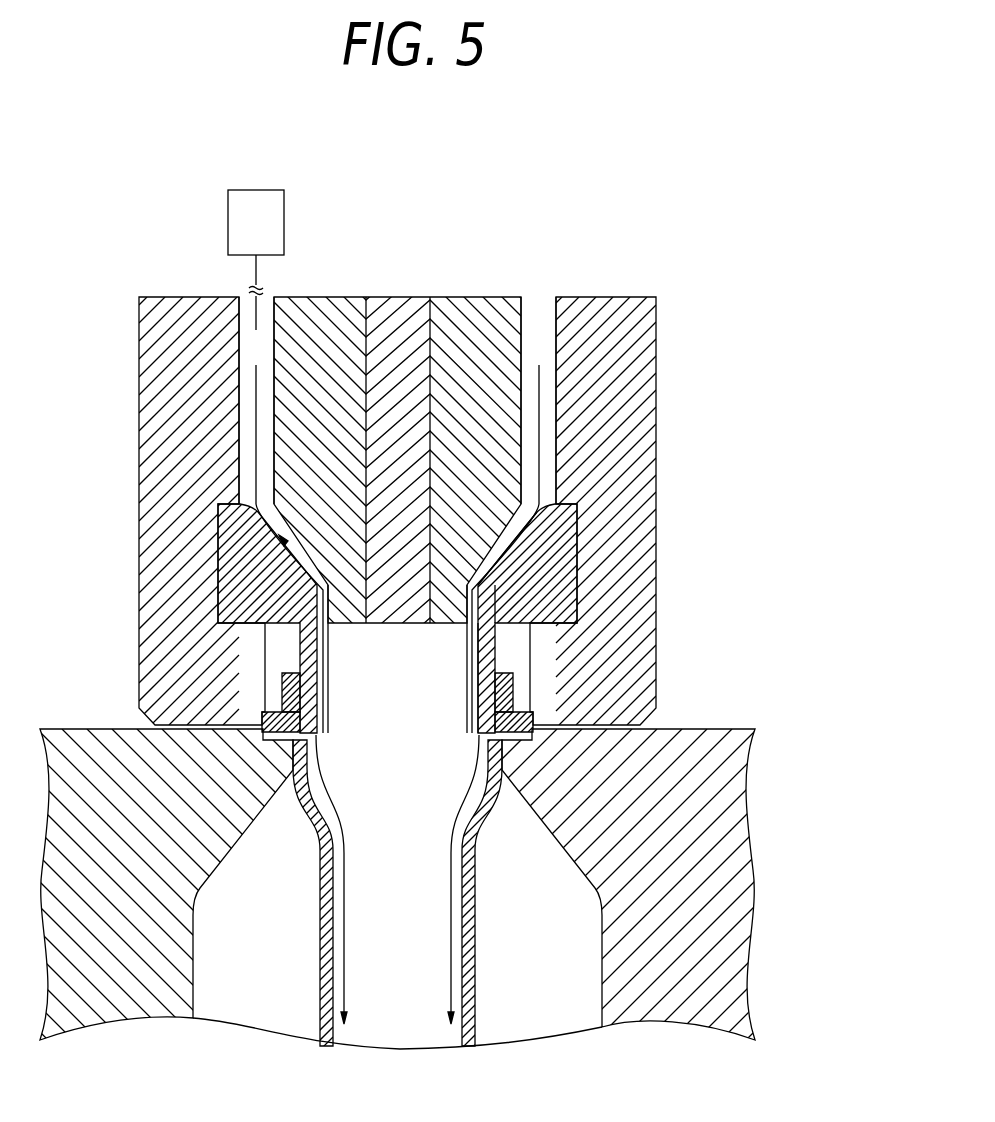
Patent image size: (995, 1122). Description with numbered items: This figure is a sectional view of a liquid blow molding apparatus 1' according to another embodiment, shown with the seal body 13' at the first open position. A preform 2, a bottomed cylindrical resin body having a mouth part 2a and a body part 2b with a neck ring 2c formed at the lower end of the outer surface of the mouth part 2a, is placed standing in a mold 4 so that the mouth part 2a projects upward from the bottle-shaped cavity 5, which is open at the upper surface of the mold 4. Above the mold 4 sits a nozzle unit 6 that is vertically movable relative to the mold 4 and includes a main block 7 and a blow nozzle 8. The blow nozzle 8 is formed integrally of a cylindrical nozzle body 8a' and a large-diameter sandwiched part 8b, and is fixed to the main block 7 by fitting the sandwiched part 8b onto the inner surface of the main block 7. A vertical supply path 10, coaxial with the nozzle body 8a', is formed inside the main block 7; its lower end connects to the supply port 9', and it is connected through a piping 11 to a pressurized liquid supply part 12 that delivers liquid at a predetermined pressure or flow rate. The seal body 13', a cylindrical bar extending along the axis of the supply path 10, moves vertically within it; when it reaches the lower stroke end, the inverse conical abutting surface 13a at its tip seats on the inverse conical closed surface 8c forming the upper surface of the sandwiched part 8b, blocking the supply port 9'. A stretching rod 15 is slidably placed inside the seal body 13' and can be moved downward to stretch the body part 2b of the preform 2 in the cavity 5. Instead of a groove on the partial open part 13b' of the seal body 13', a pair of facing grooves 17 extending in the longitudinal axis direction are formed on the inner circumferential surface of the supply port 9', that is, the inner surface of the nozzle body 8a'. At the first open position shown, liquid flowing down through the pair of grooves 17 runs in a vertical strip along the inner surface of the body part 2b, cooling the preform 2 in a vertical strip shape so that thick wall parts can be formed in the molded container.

The liquid blow molding apparatus 1' is at (413, 563).
The preform 2 is at (482, 893).
The mouth part 2a is at (502, 707).
The body part 2b is at (477, 945).
The neck ring 2c is at (532, 728).
The mold 4 is at (724, 726).
The cavity 5 is at (605, 987).
The nozzle unit 6 is at (684, 415).
The main block 7 is at (659, 455).
The blow nozzle 8 is at (582, 563).
The nozzle body 8a' is at (594, 673).
The sandwiched part 8b is at (527, 592).
The closed surface 8c is at (505, 546).
The supply port 9' is at (343, 659).
The supply path 10 is at (548, 348).
The piping 11 is at (256, 268).
The pressurized liquid supply part 12 is at (228, 220).
The seal body 13' is at (198, 549).
The abutting surface 13a is at (516, 543).
The partial open part 13b' is at (436, 659).
The stretching rod 15 is at (387, 604).
The groove 17 is at (327, 697).